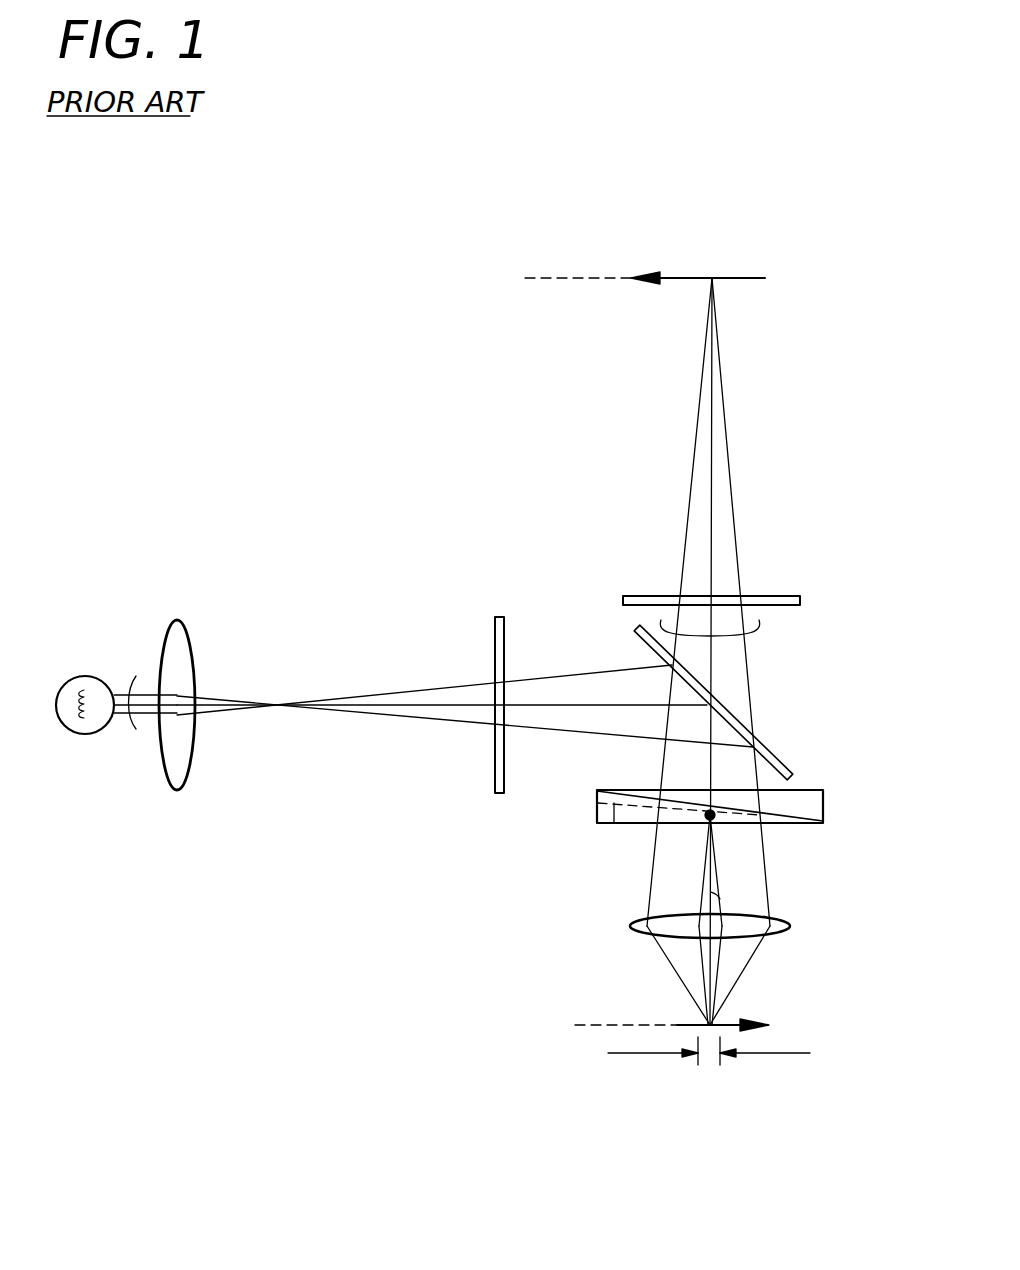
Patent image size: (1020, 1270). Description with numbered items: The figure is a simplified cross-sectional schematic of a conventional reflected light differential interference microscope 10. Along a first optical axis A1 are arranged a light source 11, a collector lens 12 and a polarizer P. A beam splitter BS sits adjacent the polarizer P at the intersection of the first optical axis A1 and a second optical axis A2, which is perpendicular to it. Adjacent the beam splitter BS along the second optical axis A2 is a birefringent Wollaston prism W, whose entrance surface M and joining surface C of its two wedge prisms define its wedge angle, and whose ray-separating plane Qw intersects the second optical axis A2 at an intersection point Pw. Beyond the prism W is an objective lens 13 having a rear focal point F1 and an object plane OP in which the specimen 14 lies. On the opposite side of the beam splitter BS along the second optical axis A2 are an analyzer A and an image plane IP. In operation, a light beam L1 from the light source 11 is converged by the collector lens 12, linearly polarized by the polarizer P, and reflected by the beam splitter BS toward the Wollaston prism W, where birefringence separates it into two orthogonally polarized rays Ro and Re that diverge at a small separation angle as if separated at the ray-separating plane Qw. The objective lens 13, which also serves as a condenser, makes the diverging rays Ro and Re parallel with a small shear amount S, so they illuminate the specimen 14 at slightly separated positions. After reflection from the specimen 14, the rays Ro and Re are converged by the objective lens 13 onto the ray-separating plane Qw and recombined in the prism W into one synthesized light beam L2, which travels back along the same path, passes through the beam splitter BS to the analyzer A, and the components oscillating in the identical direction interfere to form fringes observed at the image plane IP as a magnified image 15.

The reflected light differential interference microscope 10 is at (290, 331).
The light source 11 is at (82, 677).
The collector lens 12 is at (178, 621).
The first optical axis A1 is at (157, 703).
The light beam L1 is at (133, 727).
The polarizer P is at (500, 617).
The magnified image 15 is at (750, 277).
The image plane IP is at (550, 284).
The second optical axis A2 is at (713, 459).
The analyzer A is at (800, 600).
The synthesized light beam L2 is at (762, 627).
The beam splitter BS is at (790, 767).
The Wollaston prism W is at (806, 807).
The entrance surface M is at (638, 790).
The ray-separating plane Qw is at (613, 806).
The joining surface C is at (642, 792).
The rear focal point F1 is at (716, 818).
The intersection point Pw is at (706, 818).
The objective lens 13 is at (790, 926).
The ordinary ray Ro is at (690, 993).
The extraordinary ray Re is at (720, 963).
The specimen 14 is at (737, 1025).
The object plane OP is at (598, 1028).
The shear amount S is at (709, 1062).